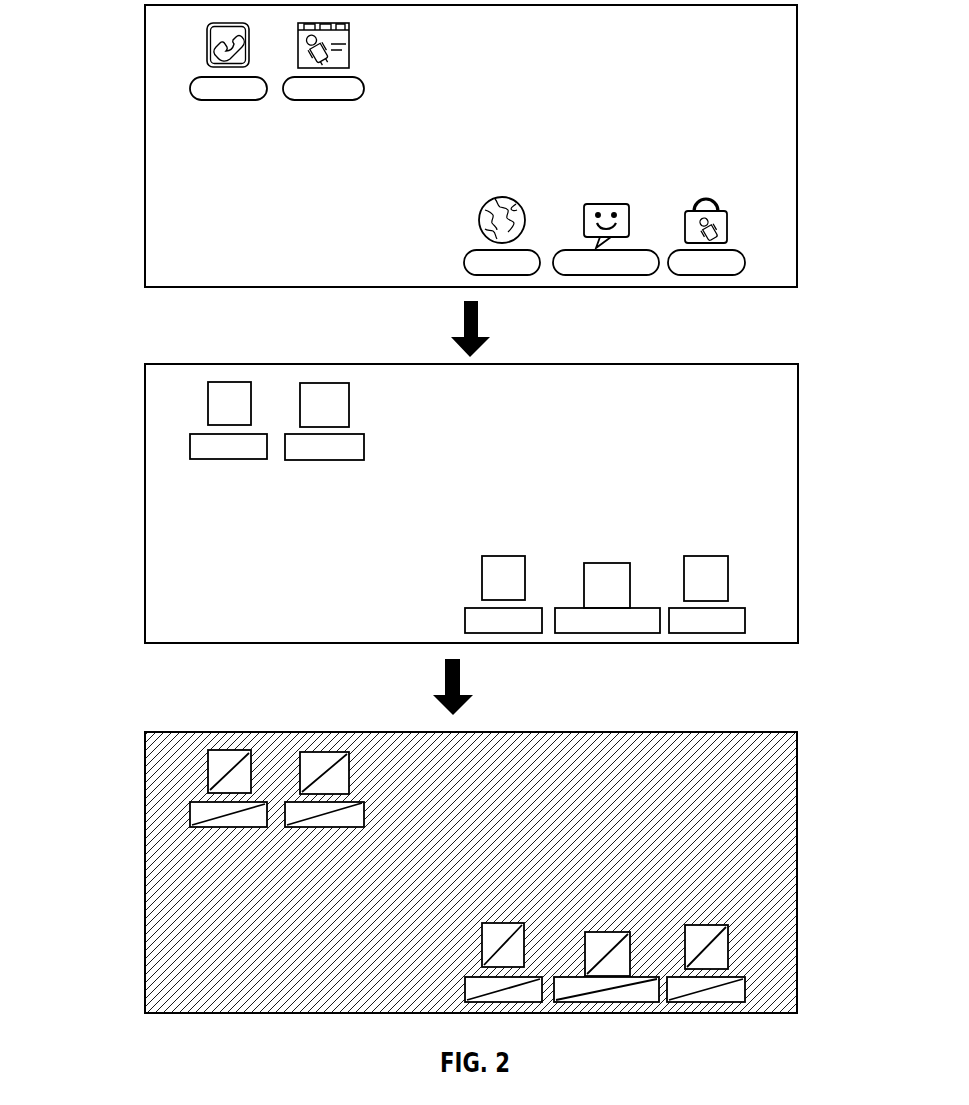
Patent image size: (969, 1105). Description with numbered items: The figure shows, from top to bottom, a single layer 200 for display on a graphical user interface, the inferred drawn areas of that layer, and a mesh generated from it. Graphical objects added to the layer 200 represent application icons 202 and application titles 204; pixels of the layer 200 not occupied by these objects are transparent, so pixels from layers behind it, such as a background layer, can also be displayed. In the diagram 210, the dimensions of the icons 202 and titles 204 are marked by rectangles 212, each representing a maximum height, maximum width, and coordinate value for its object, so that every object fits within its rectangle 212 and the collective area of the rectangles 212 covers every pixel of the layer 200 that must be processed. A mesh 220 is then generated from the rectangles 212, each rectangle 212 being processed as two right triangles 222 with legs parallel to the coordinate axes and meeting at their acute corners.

The layer 200 is at (145, 105).
The application icons 202 is at (349, 35).
The application titles 204 is at (364, 89).
The diagram 210 is at (145, 425).
The rectangles 212 is at (349, 395).
The mesh 220 is at (145, 795).
The triangles 222 is at (290, 818).